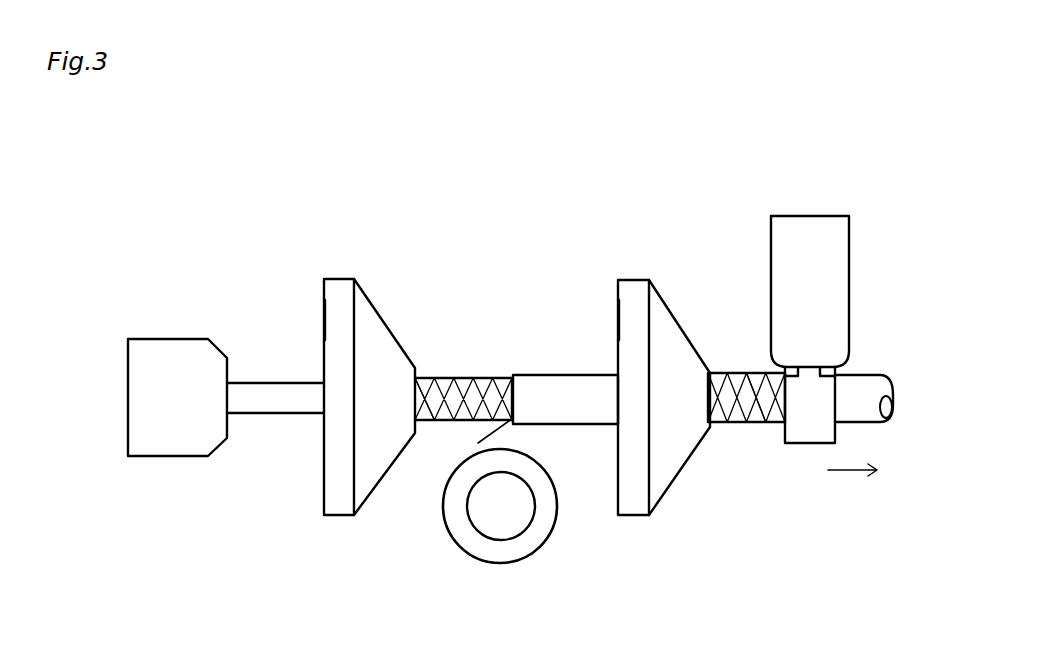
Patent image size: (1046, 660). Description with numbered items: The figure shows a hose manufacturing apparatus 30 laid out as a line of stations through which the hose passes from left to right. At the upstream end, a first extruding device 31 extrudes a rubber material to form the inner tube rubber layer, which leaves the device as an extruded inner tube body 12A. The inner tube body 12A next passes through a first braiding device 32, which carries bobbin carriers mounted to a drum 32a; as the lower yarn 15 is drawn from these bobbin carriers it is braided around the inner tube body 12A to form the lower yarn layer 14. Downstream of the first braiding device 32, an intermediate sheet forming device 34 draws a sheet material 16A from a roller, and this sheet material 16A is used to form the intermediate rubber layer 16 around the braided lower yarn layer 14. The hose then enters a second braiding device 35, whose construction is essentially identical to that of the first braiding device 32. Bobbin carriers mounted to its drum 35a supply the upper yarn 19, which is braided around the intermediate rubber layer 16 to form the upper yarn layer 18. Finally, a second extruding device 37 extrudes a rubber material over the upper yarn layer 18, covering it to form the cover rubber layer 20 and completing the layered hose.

The inner tube body 12A is at (272, 403).
The lower yarn layer 14 is at (454, 388).
The lower yarn 15 is at (428, 378).
The intermediate rubber layer 16 is at (562, 392).
The sheet material 16A is at (478, 443).
The upper yarn layer 18 is at (746, 383).
The upper yarn 19 is at (745, 420).
The cover rubber layer 20 is at (858, 388).
The hose manufacturing apparatus 30 is at (522, 215).
The first extruding device 31 is at (157, 343).
The first braiding device 32 is at (340, 287).
The drum 32a is at (335, 323).
The intermediate sheet forming device 34 is at (525, 557).
The second braiding device 35 is at (638, 288).
The drum 35a is at (633, 320).
The second extruding device 37 is at (800, 228).